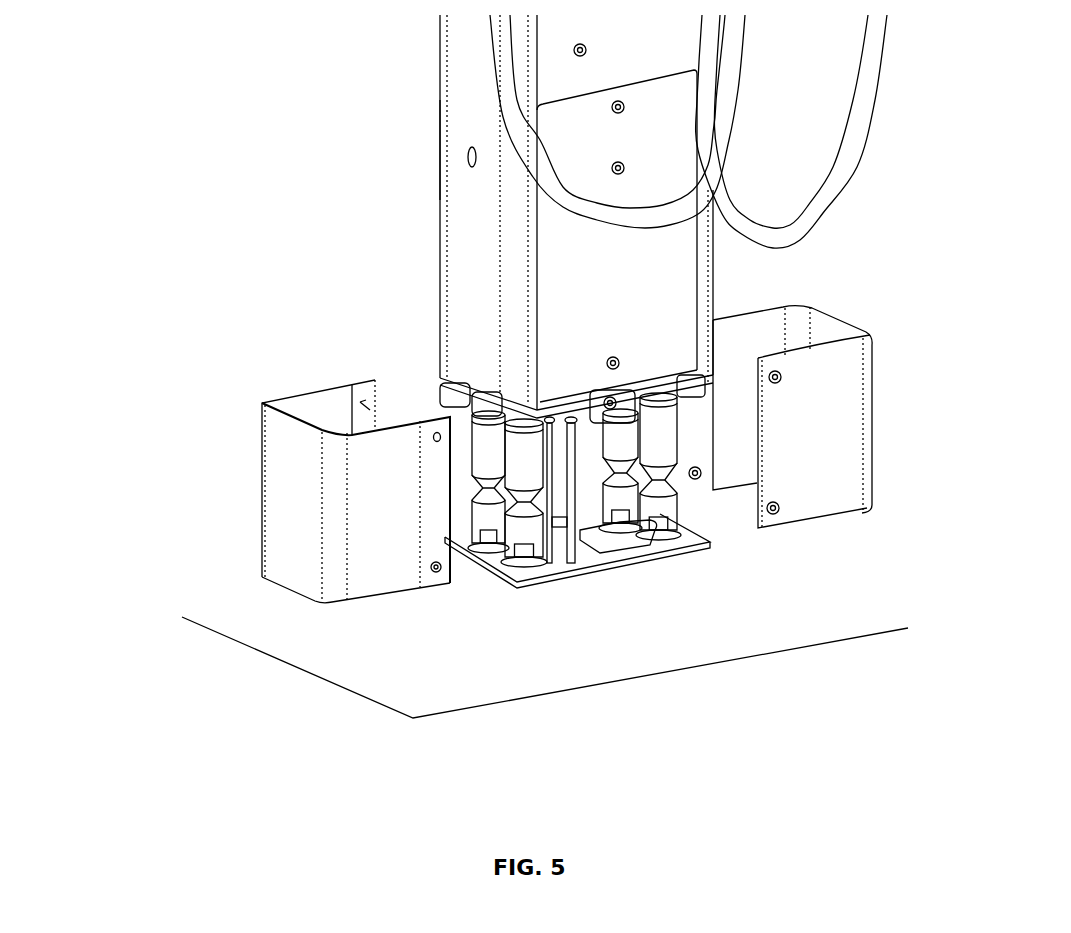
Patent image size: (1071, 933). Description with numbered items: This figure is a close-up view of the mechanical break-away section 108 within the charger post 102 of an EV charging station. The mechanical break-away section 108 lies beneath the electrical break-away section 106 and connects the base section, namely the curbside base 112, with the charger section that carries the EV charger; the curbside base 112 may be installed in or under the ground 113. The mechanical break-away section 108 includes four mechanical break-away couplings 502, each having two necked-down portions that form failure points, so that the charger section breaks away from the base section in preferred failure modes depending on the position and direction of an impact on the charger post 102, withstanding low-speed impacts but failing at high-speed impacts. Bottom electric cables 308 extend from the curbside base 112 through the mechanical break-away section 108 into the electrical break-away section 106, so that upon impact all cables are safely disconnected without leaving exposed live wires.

The charger post 102 is at (458, 150).
The electrical break-away section 106 is at (380, 232).
The mechanical break-away section 108 is at (245, 527).
The curbside base 112 is at (658, 557).
The ground 113 is at (457, 692).
The bottom electric cables 308 is at (582, 442).
The mechanical break-away coupling 502 is at (490, 433).